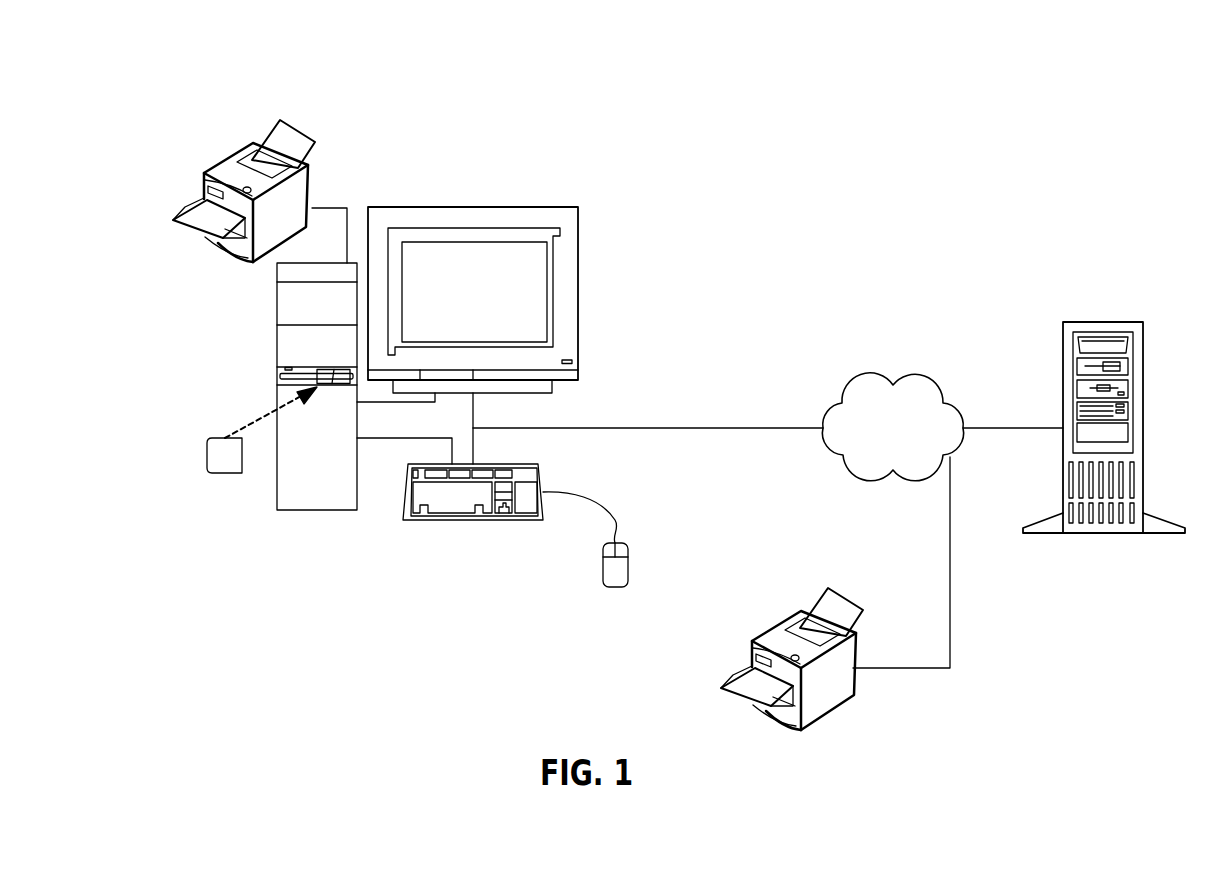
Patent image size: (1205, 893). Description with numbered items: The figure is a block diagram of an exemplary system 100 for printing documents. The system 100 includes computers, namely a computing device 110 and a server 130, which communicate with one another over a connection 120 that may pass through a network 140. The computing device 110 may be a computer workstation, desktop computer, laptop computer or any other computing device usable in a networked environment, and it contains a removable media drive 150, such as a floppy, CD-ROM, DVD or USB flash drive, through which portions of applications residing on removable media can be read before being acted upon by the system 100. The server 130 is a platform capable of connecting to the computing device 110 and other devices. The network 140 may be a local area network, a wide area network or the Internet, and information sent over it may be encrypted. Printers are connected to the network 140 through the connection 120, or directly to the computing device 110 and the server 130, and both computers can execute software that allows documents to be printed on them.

The system 100 is at (328, 40).
The computing device 110 is at (475, 279).
The connection 120 is at (648, 417).
The server 130 is at (1200, 293).
The network 140 is at (912, 440).
The removable media drive 150 is at (262, 447).